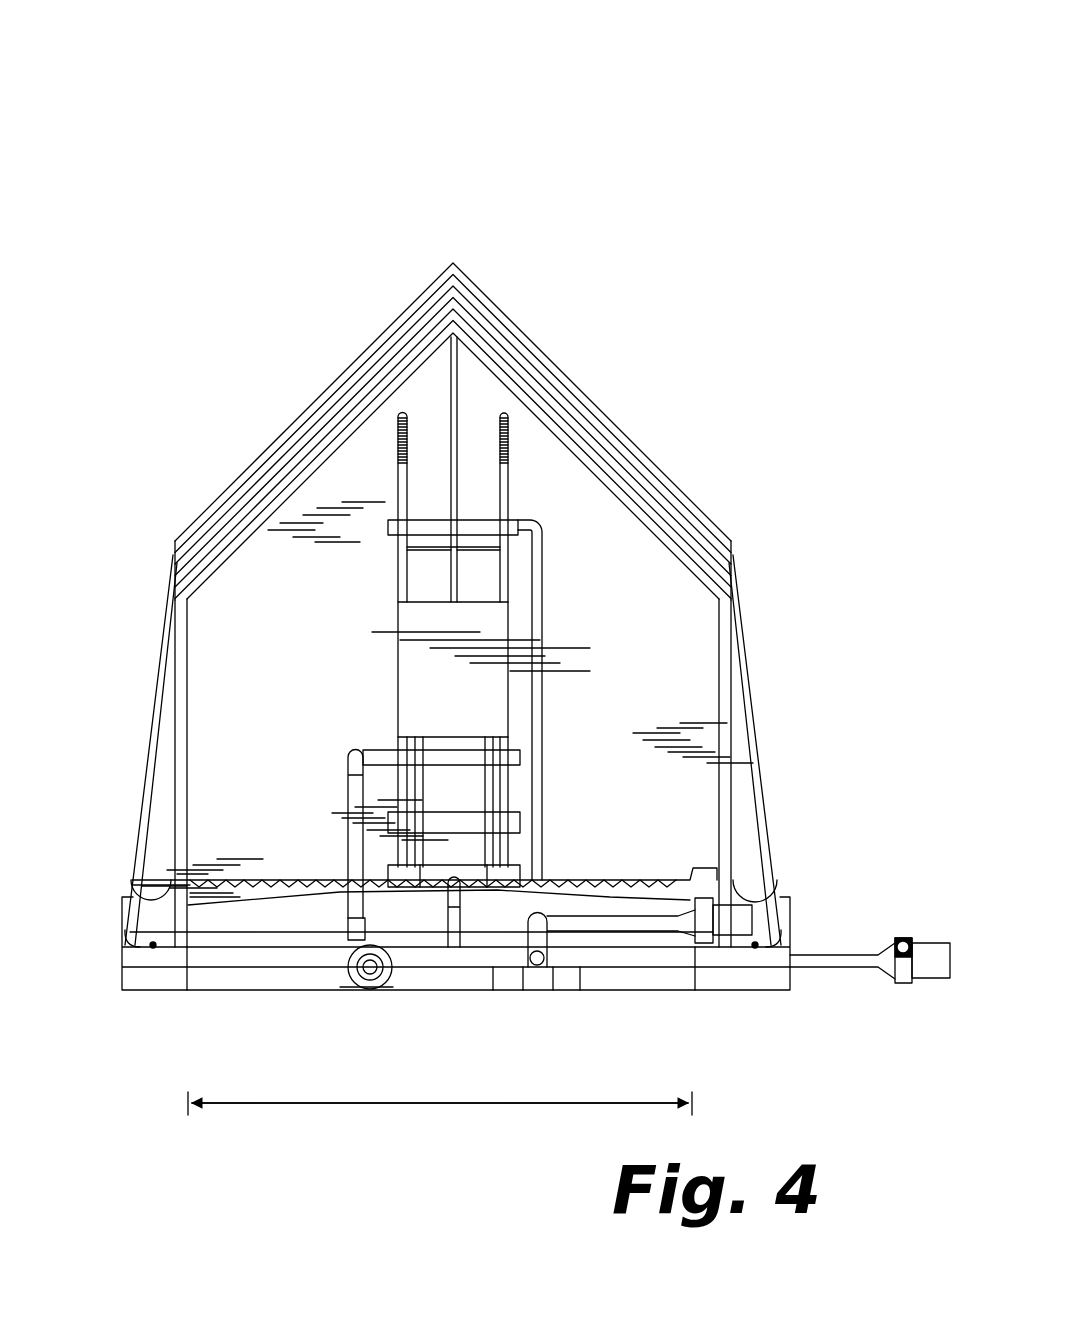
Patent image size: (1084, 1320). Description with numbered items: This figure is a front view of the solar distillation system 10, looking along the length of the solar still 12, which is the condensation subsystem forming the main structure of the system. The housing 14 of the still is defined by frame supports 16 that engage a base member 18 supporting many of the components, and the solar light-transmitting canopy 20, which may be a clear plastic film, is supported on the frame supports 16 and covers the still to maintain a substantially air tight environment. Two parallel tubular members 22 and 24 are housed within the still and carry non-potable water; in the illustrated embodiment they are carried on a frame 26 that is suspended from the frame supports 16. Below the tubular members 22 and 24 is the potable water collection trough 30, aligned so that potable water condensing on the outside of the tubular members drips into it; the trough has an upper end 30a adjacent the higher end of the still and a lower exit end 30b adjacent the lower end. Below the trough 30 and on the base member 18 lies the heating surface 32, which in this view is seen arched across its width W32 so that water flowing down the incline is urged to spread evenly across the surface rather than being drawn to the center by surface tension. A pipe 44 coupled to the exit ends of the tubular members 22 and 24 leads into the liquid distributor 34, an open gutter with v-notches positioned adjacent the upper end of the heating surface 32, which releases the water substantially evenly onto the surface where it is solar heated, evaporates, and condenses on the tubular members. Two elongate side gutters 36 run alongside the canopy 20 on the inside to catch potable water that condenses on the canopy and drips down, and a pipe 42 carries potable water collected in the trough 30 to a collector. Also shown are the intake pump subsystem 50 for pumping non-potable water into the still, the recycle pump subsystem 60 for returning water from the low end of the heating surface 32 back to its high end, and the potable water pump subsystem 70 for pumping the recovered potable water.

The solar distillation system 10 is at (748, 88).
The solar still 12 is at (723, 215).
The housing 14 is at (716, 375).
The frame supports 16 is at (175, 720).
The base member 18 is at (792, 932).
The canopy 20 is at (148, 793).
The tubular member 22 is at (397, 480).
The tubular member 24 is at (508, 480).
The frame 26 is at (398, 680).
The potable water collection trough 30 is at (522, 827).
The upper end 30a is at (450, 810).
The lower exit end 30b is at (455, 867).
The heating surface 32 is at (284, 888).
The liquid distributor 34 is at (600, 880).
The side gutters 36 is at (157, 880).
The pipe 42 is at (447, 920).
The pipe 44 is at (542, 583).
The intake pump subsystem 50 is at (356, 1004).
The recycle pump subsystem 60 is at (728, 1007).
The potable water pump subsystem 70 is at (903, 997).
The width of heating surface W32 is at (420, 1104).